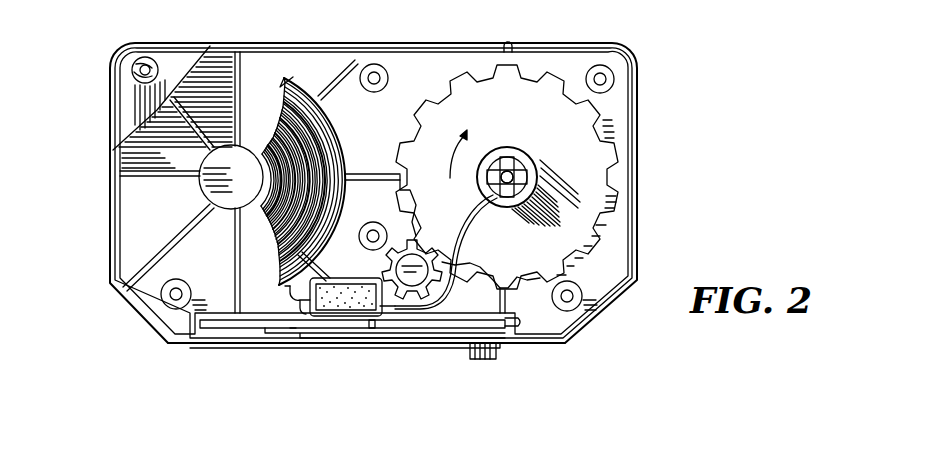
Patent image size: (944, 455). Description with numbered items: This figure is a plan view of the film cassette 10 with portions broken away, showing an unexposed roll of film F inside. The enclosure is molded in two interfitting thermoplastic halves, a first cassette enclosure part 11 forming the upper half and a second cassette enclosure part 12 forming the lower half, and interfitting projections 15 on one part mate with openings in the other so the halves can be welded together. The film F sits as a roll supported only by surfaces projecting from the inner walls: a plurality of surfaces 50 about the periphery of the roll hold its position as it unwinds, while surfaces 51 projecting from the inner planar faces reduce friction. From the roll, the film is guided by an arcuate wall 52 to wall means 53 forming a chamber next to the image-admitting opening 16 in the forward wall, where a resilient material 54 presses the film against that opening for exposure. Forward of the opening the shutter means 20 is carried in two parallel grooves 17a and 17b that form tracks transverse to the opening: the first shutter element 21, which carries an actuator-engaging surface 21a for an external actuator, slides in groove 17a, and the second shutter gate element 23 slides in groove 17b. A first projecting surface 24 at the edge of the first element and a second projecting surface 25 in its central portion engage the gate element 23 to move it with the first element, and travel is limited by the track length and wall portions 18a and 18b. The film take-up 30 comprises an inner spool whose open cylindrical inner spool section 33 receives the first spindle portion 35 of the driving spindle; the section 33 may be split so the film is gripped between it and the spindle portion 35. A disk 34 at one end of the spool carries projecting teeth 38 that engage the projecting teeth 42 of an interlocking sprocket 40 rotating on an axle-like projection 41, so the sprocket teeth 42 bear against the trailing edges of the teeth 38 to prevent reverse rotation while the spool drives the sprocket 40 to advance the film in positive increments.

The film cassette 10 is at (673, 152).
The first cassette enclosure part 11 is at (172, 50).
The second cassette enclosure part 12 is at (637, 78).
The interfitting projections 15 is at (143, 60).
The image-admitting opening 16 is at (351, 318).
The groove 17a is at (235, 343).
The groove 17b is at (293, 323).
The wall portion 18a is at (215, 343).
The wall portion 18b is at (278, 313).
The shutter means 20 is at (446, 358).
The first shutter element 21 is at (427, 340).
The actuator-engaging surface 21a is at (475, 353).
The second shutter element 23 is at (403, 328).
The first projecting surface 24 is at (510, 323).
The second projecting surface 25 is at (373, 328).
The film take-up 30 is at (548, 198).
The inner spool section 33 is at (510, 147).
The disk 34 is at (512, 122).
The first spindle portion 35 is at (523, 173).
The projecting teeth 38 is at (413, 223).
The interlocking sprocket 40 is at (392, 242).
The axle-like projection 41 is at (437, 258).
The projecting teeth 42 is at (450, 303).
The film-supporting surfaces 50 is at (222, 50).
The projecting surfaces 51 is at (330, 76).
The arcuate wall 52 is at (293, 303).
The wall means 53 is at (345, 277).
The resilient material 54 is at (358, 287).
The film F is at (345, 132).